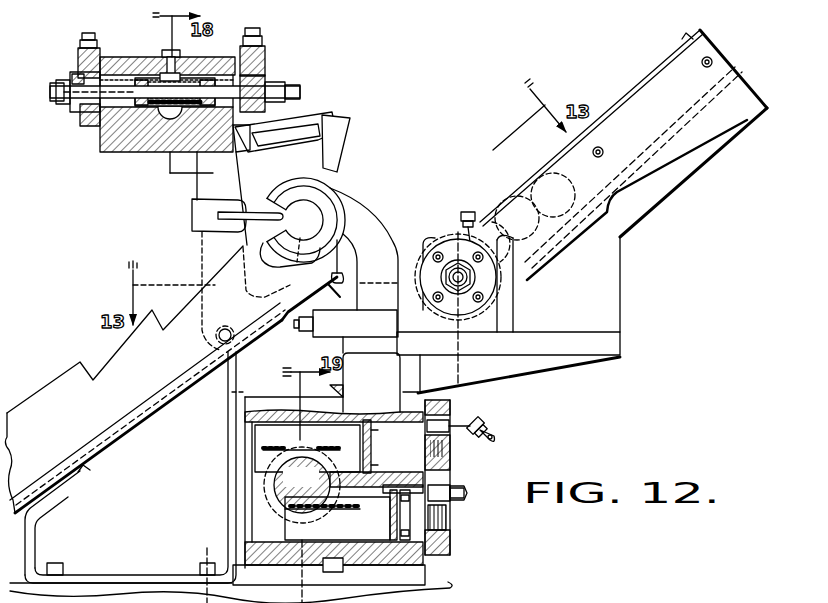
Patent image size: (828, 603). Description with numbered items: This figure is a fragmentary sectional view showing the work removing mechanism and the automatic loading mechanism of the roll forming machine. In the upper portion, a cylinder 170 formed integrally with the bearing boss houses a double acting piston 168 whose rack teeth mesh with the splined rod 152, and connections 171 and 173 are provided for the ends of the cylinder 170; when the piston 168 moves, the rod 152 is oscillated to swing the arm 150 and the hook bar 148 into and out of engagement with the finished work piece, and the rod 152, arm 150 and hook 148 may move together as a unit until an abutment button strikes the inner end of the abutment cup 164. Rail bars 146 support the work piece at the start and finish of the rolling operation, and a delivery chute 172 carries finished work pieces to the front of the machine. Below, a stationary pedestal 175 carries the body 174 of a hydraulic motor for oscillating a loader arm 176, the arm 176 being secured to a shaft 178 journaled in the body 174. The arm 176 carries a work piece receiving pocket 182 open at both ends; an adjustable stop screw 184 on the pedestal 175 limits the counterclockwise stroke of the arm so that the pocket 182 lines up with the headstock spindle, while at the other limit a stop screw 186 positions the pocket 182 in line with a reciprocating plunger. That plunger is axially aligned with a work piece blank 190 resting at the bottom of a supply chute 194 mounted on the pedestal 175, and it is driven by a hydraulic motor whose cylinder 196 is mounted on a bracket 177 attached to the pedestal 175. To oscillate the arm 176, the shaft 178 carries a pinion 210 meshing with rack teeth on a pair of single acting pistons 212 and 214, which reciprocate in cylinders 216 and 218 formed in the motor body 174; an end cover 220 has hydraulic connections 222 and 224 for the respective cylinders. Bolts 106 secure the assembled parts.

The bolt 106 is at (80, 42).
The rail bars 146 is at (200, 236).
The hook bar 148 is at (338, 150).
The arm 150 is at (336, 120).
The rod 152 is at (155, 150).
The abutment cup 164 is at (75, 108).
The double acting piston 168 is at (186, 66).
The cylinder 170 is at (140, 60).
The connection 171 is at (90, 128).
The delivery chute 172 is at (88, 428).
The connection 173 is at (247, 138).
The body 174 is at (248, 413).
The pedestal 175 is at (428, 575).
The loader arm 176 is at (355, 232).
The bracket 177 is at (505, 370).
The shaft 178 is at (302, 485).
The work piece receiving pocket 182 is at (318, 205).
The adjustable stop screw 184 is at (301, 332).
The stop screw 186 is at (493, 436).
The work piece blank 190 is at (546, 270).
The supply chute 194 is at (641, 91).
The cylinder 196 is at (524, 278).
The pinion 210 is at (283, 505).
The single acting piston 212 is at (360, 447).
The single acting piston 214 is at (382, 535).
The cylinder 216 is at (404, 425).
The cylinder 218 is at (452, 502).
The end cover 220 is at (452, 546).
The hydraulic connection 222 is at (452, 455).
The hydraulic connection 224 is at (450, 520).